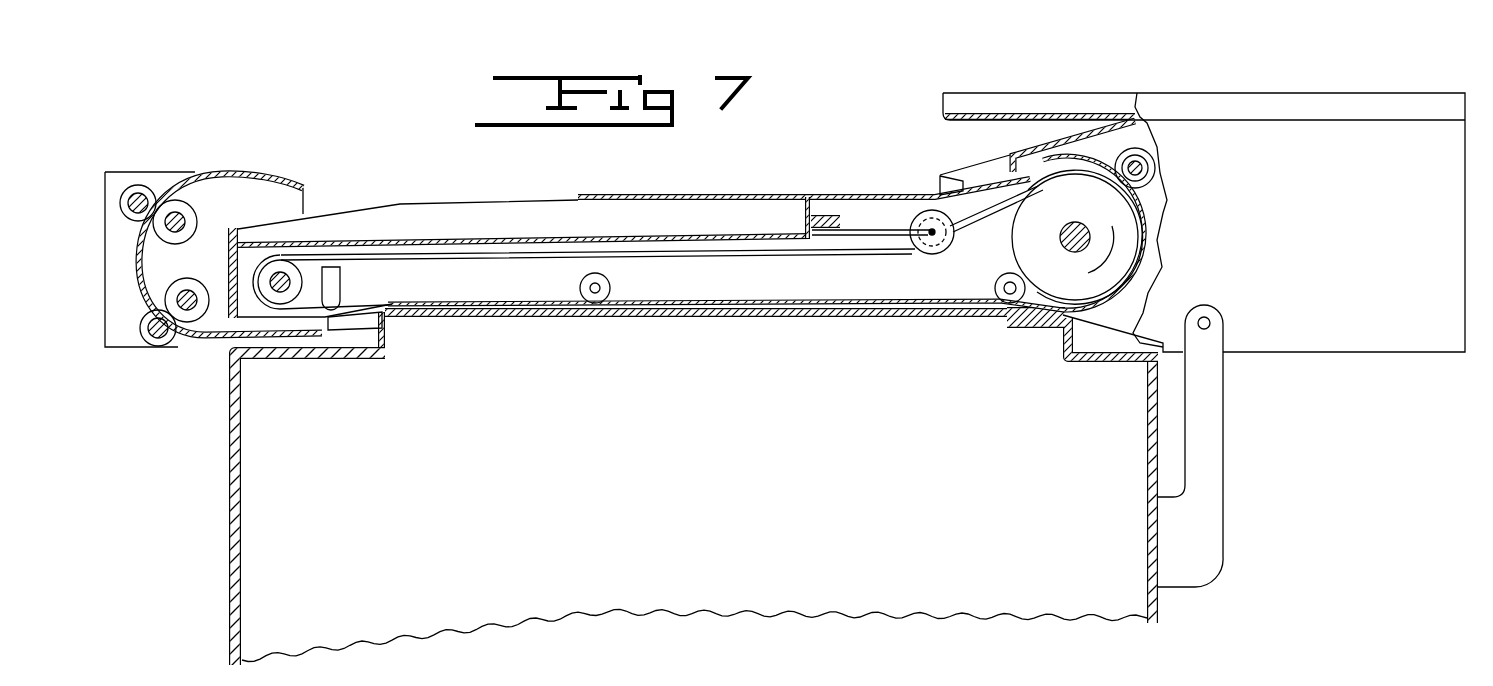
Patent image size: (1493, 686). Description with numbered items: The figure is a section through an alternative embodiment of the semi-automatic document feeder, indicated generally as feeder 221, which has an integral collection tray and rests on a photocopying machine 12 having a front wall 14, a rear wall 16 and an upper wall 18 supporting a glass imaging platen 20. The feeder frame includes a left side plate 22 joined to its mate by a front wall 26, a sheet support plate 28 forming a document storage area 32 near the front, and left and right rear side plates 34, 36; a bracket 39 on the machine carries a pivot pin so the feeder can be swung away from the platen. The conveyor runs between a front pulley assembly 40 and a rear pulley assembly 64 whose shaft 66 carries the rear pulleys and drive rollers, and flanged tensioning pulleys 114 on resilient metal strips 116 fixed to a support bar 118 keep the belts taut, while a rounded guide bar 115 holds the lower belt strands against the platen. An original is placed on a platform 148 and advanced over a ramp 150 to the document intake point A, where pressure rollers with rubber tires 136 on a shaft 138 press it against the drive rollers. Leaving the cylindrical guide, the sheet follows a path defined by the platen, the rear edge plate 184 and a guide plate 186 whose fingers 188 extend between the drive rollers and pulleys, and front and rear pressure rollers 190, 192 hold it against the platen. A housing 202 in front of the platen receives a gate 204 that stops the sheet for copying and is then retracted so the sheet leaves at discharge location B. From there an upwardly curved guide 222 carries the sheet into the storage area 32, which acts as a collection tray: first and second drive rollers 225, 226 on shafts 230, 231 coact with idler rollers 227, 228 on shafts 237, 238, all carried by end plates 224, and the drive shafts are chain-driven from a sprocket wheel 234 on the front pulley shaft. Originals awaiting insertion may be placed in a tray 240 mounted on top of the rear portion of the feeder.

The photocopying machine 12 is at (1240, 575).
The front wall 14 is at (228, 525).
The rear wall 16 is at (1160, 456).
The upper wall 18 is at (1098, 363).
The glass imaging platen 20 is at (792, 320).
The left side plate 22 is at (766, 288).
The front wall 26 is at (245, 300).
The sheet support plate 28 is at (530, 236).
The document storage area 32 is at (461, 223).
The left rear side plate 34 is at (1100, 148).
The right rear side plate 36 is at (1324, 183).
The bracket 39 is at (1225, 512).
The front pulley assembly 40 is at (307, 272).
The rear pulley assembly 64 is at (1000, 248).
The shaft 66 is at (1088, 250).
The flanged tensioning pulley 114 is at (918, 252).
The rounded guide bar 115 is at (343, 290).
The resilient metal strip 116 is at (893, 228).
The support bar 118 is at (833, 214).
The rubber tire 136 is at (1150, 150).
The shaft 138 is at (1142, 170).
The platform 148 is at (772, 194).
The ramp 150 is at (962, 188).
The rear edge plate 184 is at (1020, 330).
The guide plate 186 is at (836, 310).
The finger 188 is at (1113, 242).
The front pressure roller 190 is at (611, 296).
The rear pressure roller 192 is at (995, 275).
The housing 202 is at (392, 338).
The gate 204 is at (372, 332).
The alternative embodiment of document feeder 221 is at (819, 168).
The upwardly curved guide 222 is at (135, 267).
The end plate 224 is at (178, 168).
The first plurality of drive rollers 225 is at (207, 343).
The second plurality of drive rollers 226 is at (215, 200).
The first plurality of idler rollers 227 is at (177, 343).
The second plurality of idler rollers 228 is at (122, 187).
The shaft 230 is at (190, 292).
The shaft 231 is at (197, 222).
The sprocket wheel 234 is at (595, 5).
The shaft 237 is at (152, 337).
The shaft 238 is at (148, 207).
The tray 240 is at (1384, 92).
The document intake point A is at (1003, 178).
The discharge location B is at (310, 330).